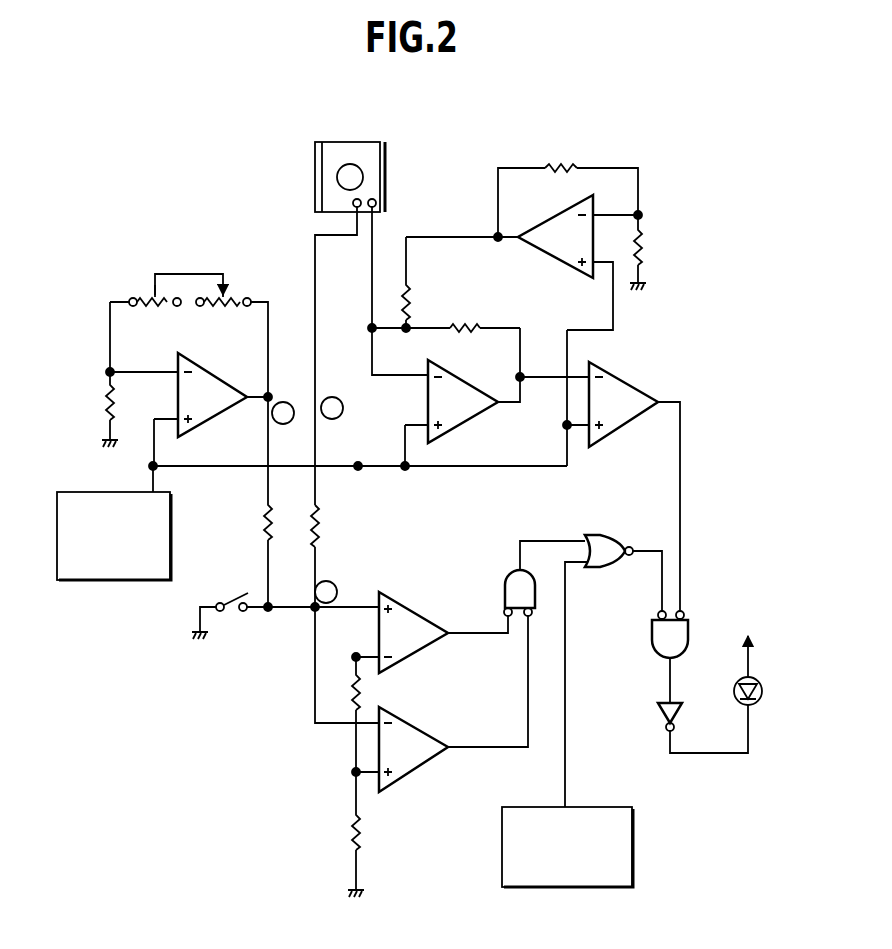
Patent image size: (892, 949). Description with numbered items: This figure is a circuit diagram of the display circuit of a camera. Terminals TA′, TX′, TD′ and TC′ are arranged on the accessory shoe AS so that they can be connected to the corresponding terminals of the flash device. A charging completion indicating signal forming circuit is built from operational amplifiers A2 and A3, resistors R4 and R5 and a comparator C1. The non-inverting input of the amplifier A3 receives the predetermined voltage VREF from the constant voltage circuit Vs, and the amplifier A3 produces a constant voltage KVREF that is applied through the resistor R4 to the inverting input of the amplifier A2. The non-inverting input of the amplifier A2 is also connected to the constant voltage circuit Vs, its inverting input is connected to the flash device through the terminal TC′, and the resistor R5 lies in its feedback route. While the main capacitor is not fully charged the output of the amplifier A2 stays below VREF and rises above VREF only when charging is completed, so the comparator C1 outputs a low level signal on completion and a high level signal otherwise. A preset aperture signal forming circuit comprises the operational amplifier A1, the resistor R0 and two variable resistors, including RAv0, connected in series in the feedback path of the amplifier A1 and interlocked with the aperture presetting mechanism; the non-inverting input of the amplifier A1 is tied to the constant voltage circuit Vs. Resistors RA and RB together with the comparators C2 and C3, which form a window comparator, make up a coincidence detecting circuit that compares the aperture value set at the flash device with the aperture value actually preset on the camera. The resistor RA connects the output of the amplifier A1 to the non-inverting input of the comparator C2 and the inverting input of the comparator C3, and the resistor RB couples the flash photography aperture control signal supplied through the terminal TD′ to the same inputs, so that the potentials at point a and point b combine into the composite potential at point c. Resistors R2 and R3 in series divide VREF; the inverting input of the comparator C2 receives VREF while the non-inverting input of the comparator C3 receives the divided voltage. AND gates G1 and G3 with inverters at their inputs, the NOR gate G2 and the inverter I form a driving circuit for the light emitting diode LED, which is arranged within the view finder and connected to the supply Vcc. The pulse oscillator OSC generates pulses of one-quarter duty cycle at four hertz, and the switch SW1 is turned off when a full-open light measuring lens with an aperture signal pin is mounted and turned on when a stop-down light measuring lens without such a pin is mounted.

The terminal TA′ is at (318, 152).
The terminal TX′ is at (349, 176).
The sensor assembly AS is at (388, 168).
The terminal TD′ is at (352, 206).
The terminal TC′ is at (377, 206).
The operational amplifier A3 is at (554, 218).
The constant voltage KVREF is at (452, 251).
The resistor R4 is at (420, 284).
The resistor R5 is at (444, 337).
The operational amplifier A2 is at (452, 380).
The comparator C1 is at (626, 390).
The predetermined voltage VREF is at (358, 478).
The operational amplifier A1 is at (213, 407).
The variable resistor RAv0 is at (232, 347).
The resistor R0 is at (122, 409).
The point b is at (283, 413).
The point a is at (332, 408).
The point c is at (326, 592).
The constant voltage circuit Vs is at (104, 492).
The resistor RA is at (252, 504).
The resistor RB is at (328, 558).
The switch SW1 is at (285, 619).
The comparator C2 is at (422, 626).
The resistor R2 is at (371, 714).
The comparator C3 is at (432, 742).
The resistor R3 is at (369, 834).
The AND gate G1 is at (544, 578).
The NOR gate G2 is at (613, 671).
The AND gate G3 is at (670, 657).
The inverter I is at (672, 708).
The light emitting diode LED is at (764, 687).
The supply voltage Vcc is at (749, 622).
The pulse oscillator OSC is at (604, 794).